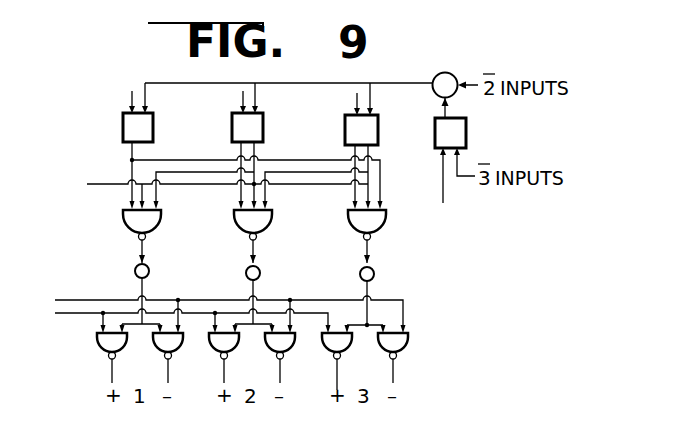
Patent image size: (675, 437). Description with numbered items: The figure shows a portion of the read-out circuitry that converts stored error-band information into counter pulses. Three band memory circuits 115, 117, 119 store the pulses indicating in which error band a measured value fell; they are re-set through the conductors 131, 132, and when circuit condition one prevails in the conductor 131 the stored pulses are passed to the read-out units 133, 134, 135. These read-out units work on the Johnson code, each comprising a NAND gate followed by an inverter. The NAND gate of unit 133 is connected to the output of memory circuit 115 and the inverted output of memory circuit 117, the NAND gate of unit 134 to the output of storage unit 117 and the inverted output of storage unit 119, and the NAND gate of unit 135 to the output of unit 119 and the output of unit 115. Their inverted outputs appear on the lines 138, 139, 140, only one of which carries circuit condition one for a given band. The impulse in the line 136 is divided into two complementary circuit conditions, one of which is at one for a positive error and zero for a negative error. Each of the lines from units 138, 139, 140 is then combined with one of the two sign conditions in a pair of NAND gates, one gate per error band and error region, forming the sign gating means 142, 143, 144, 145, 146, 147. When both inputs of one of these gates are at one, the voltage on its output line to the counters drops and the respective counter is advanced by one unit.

The band memory circuit 115 is at (140, 126).
The band memory circuit 117 is at (250, 126).
The band memory circuit 119 is at (365, 130).
The conductor 131 is at (226, 182).
The conductor 132 is at (453, 166).
The read-out unit 133 is at (130, 250).
The read-out unit 134 is at (240, 251).
The read-out unit 135 is at (354, 250).
The line 136 is at (48, 289).
The line 138 is at (148, 286).
The conductor 139 is at (258, 289).
The line 140 is at (372, 290).
The NAND gate 142 is at (110, 372).
The NAND gate 143 is at (169, 375).
The NAND gate 144 is at (221, 380).
The NAND gate 145 is at (281, 378).
The NAND gate 146 is at (335, 375).
The NAND gate 147 is at (395, 378).